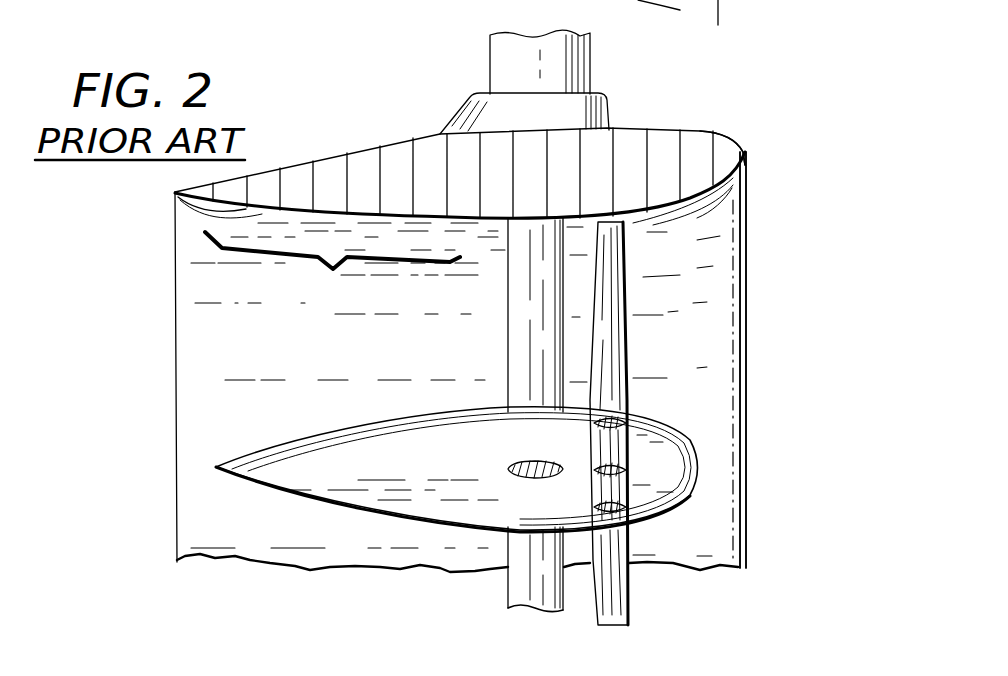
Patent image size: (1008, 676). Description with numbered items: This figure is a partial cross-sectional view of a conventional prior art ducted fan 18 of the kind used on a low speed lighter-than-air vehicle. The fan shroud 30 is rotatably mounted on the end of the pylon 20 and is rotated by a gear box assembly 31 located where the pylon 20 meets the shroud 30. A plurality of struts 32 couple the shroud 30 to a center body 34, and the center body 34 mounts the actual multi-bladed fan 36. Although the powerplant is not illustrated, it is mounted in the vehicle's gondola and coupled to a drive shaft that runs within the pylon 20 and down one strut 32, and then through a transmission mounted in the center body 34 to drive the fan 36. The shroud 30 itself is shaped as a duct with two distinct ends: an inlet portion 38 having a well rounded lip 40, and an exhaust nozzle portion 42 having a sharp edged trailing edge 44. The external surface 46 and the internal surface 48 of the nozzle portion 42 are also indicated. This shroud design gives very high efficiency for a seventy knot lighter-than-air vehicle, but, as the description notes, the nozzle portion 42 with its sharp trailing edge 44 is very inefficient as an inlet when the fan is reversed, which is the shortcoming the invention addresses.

The ducted fan 18 is at (371, 94).
The pylon 20 is at (592, 50).
The fan shroud 30 is at (694, 129).
The gear box assembly 31 is at (612, 106).
The struts 32 is at (506, 348).
The center body 34 is at (327, 435).
The multi-bladed fan 36 is at (629, 345).
The inlet portion 38 is at (757, 205).
The well rounded lip 40 is at (746, 150).
The exhaust nozzle portion 42 is at (332, 271).
The trailing edge 44 is at (172, 194).
The external surface 46 is at (306, 160).
The internal surface 48 is at (176, 198).